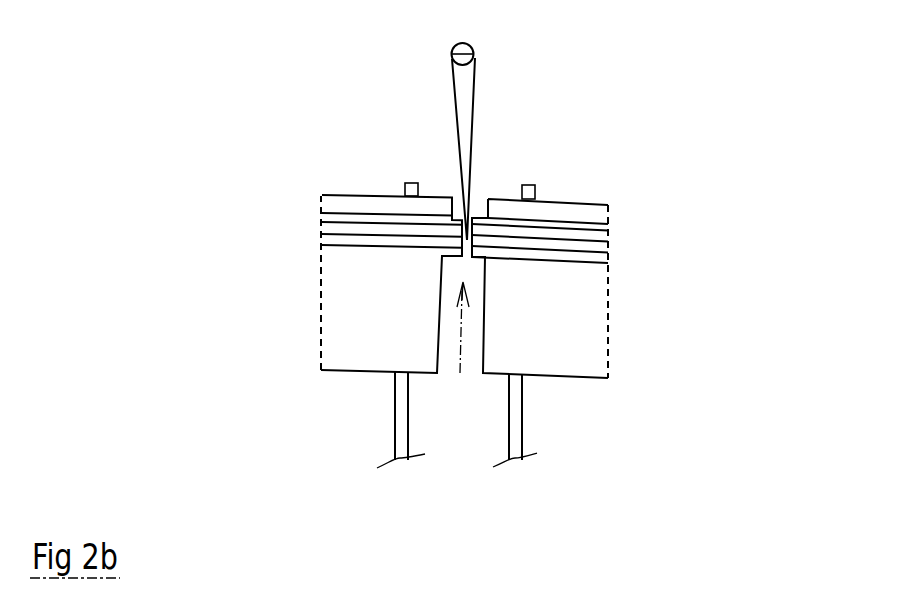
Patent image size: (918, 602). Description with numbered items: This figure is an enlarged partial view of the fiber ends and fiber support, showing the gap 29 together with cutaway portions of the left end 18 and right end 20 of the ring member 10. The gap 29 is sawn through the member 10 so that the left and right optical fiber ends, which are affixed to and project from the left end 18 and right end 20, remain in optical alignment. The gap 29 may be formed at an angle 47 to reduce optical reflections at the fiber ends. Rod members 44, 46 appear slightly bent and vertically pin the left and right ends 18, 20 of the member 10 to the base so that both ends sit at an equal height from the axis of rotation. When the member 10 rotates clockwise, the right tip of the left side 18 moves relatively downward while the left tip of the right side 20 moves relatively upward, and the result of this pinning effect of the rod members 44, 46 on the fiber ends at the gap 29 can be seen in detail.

The ring member 10 is at (290, 358).
The left end of the member 18 is at (428, 285).
The right end of the member 20 is at (502, 285).
The gap 29 is at (460, 373).
The rod member 44 is at (392, 418).
The rod member 46 is at (522, 413).
The angle 47 is at (474, 49).